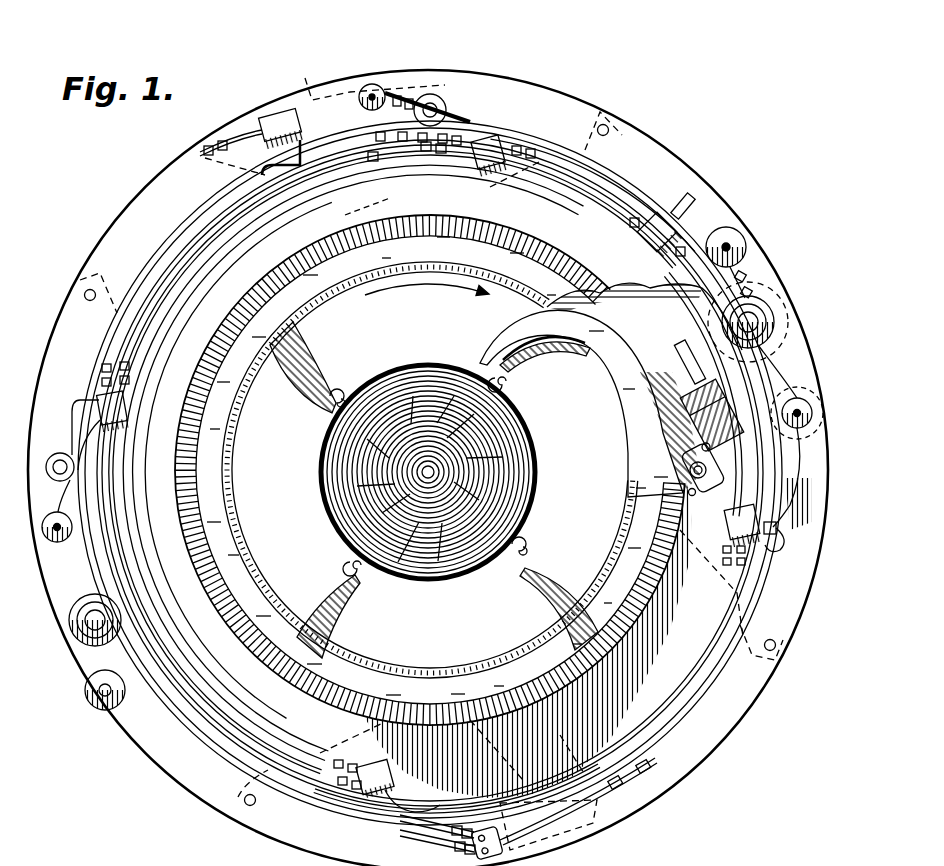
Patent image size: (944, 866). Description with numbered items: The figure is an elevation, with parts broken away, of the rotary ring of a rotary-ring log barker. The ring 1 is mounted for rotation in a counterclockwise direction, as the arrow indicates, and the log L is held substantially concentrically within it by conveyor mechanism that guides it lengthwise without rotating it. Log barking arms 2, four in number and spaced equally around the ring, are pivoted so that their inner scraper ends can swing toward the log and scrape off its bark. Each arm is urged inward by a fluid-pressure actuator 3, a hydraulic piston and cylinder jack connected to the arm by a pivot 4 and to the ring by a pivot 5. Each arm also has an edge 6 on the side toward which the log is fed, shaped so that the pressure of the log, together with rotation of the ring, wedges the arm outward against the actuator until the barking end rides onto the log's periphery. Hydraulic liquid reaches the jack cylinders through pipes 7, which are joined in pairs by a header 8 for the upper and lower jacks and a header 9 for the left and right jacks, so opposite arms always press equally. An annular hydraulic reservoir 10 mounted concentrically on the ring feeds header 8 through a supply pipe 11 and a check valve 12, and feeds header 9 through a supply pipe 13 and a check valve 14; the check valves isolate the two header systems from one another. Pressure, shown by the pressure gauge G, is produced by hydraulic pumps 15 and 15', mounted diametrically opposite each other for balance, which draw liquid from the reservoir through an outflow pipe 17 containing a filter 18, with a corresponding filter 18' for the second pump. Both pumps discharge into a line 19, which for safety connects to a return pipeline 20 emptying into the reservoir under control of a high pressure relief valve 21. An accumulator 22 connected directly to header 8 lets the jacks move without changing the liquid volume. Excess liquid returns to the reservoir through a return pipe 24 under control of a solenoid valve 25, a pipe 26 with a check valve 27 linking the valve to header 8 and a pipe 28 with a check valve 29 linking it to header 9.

The ring 1 is at (128, 229).
The log barking arms 2 is at (522, 336).
The fluid-pressure actuator 3 is at (690, 436).
The pivot 4 is at (690, 466).
The pivot 5 is at (780, 284).
The edge 6 is at (308, 368).
The pipes 7 is at (772, 548).
The header 8 is at (184, 276).
The header 9 is at (110, 493).
The annular hydraulic reservoir 10 is at (434, 678).
The supply pipe 11 is at (595, 203).
The check valve 12 is at (520, 152).
The supply pipe 13 is at (673, 292).
The check valve 14 is at (730, 505).
The hydraulic pump 15 is at (773, 309).
The hydraulic pump 15' is at (71, 623).
The outflow pipe 17 is at (697, 372).
The filter 18 is at (745, 242).
The filter 18' is at (136, 710).
The line 19 is at (200, 216).
The return pipeline 20 is at (600, 752).
The high pressure relief valve 21 is at (636, 784).
The accumulator 22 is at (326, 92).
The return pipe 24 is at (322, 218).
The solenoid valve 25 is at (262, 138).
The pipe 26 is at (373, 157).
The check valve 27 is at (420, 147).
The pipe 28 is at (190, 247).
The check valve 29 is at (138, 386).
The log L is at (437, 578).
The pressure gauge G is at (676, 208).